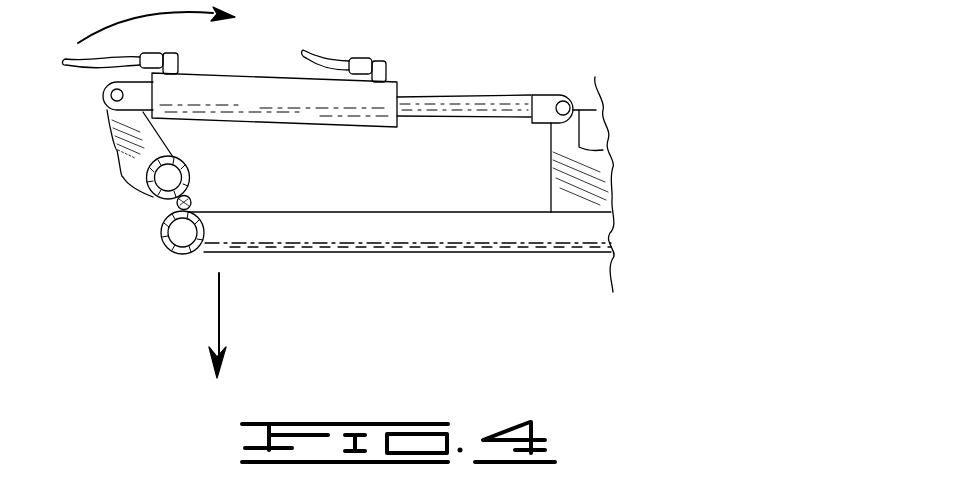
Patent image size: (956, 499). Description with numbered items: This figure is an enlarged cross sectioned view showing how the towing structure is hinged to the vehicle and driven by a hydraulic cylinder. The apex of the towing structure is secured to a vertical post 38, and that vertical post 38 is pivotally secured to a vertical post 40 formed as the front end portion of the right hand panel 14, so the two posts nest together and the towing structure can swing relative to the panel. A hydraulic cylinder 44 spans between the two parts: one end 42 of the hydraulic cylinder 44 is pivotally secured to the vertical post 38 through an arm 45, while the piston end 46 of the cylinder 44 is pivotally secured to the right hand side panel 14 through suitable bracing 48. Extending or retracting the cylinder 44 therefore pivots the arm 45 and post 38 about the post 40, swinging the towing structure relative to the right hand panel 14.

The right hand panel 14 is at (378, 251).
The vertical post 38 is at (188, 163).
The vertical post 40 is at (162, 247).
The end of hydraulic cylinder 42 is at (131, 104).
The hydraulic cylinder 44 is at (256, 80).
The arm 45 is at (127, 152).
The piston end 46 is at (547, 102).
The bracing 48 is at (587, 188).